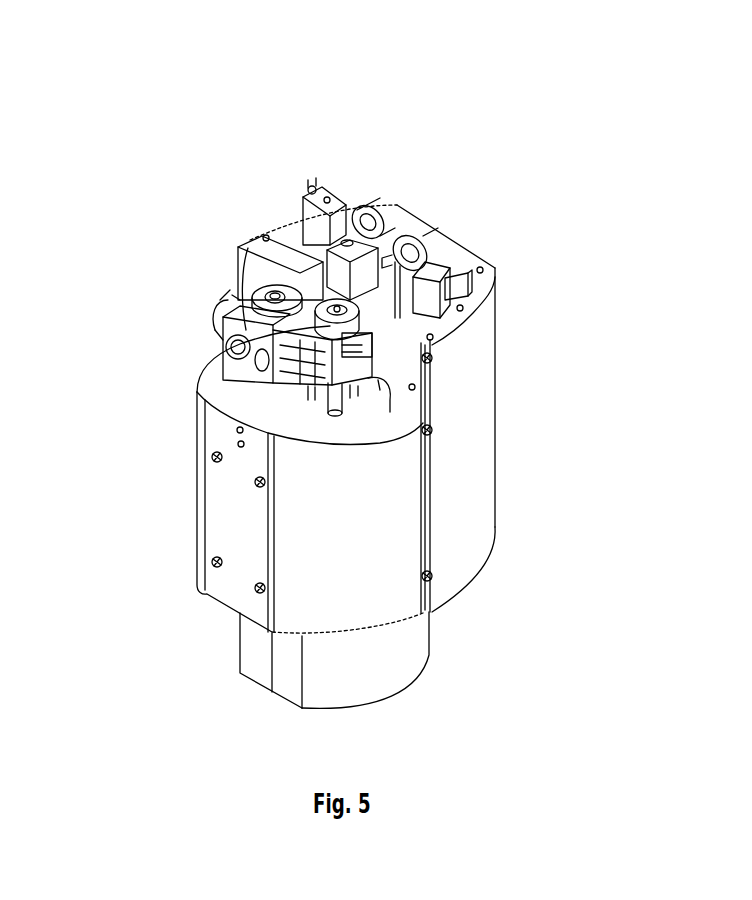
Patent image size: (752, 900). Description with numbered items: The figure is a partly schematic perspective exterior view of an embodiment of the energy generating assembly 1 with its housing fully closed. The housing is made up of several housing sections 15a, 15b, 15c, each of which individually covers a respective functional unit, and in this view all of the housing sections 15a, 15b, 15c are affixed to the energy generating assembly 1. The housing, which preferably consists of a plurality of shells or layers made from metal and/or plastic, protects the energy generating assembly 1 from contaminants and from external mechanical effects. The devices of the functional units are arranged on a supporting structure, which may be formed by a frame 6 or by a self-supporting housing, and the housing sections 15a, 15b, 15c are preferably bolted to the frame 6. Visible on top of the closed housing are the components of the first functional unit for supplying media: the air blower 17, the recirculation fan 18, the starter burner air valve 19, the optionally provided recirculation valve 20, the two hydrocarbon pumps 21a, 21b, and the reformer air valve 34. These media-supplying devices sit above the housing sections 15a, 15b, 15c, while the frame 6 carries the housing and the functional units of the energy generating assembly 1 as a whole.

The energy generating assembly 1 is at (57, 28).
The frame 6 is at (427, 408).
The housing section 15a is at (250, 270).
The housing section 15b is at (383, 575).
The housing section 15c is at (283, 681).
The air blower 17 is at (252, 305).
The recirculation fan 18 is at (373, 320).
The starter burner air valve 19 is at (262, 236).
The recirculation valve 20 is at (462, 267).
The hydrocarbon pump 21a is at (378, 212).
The hydrocarbon pump 21b is at (428, 236).
The reformer air valve 34 is at (320, 200).